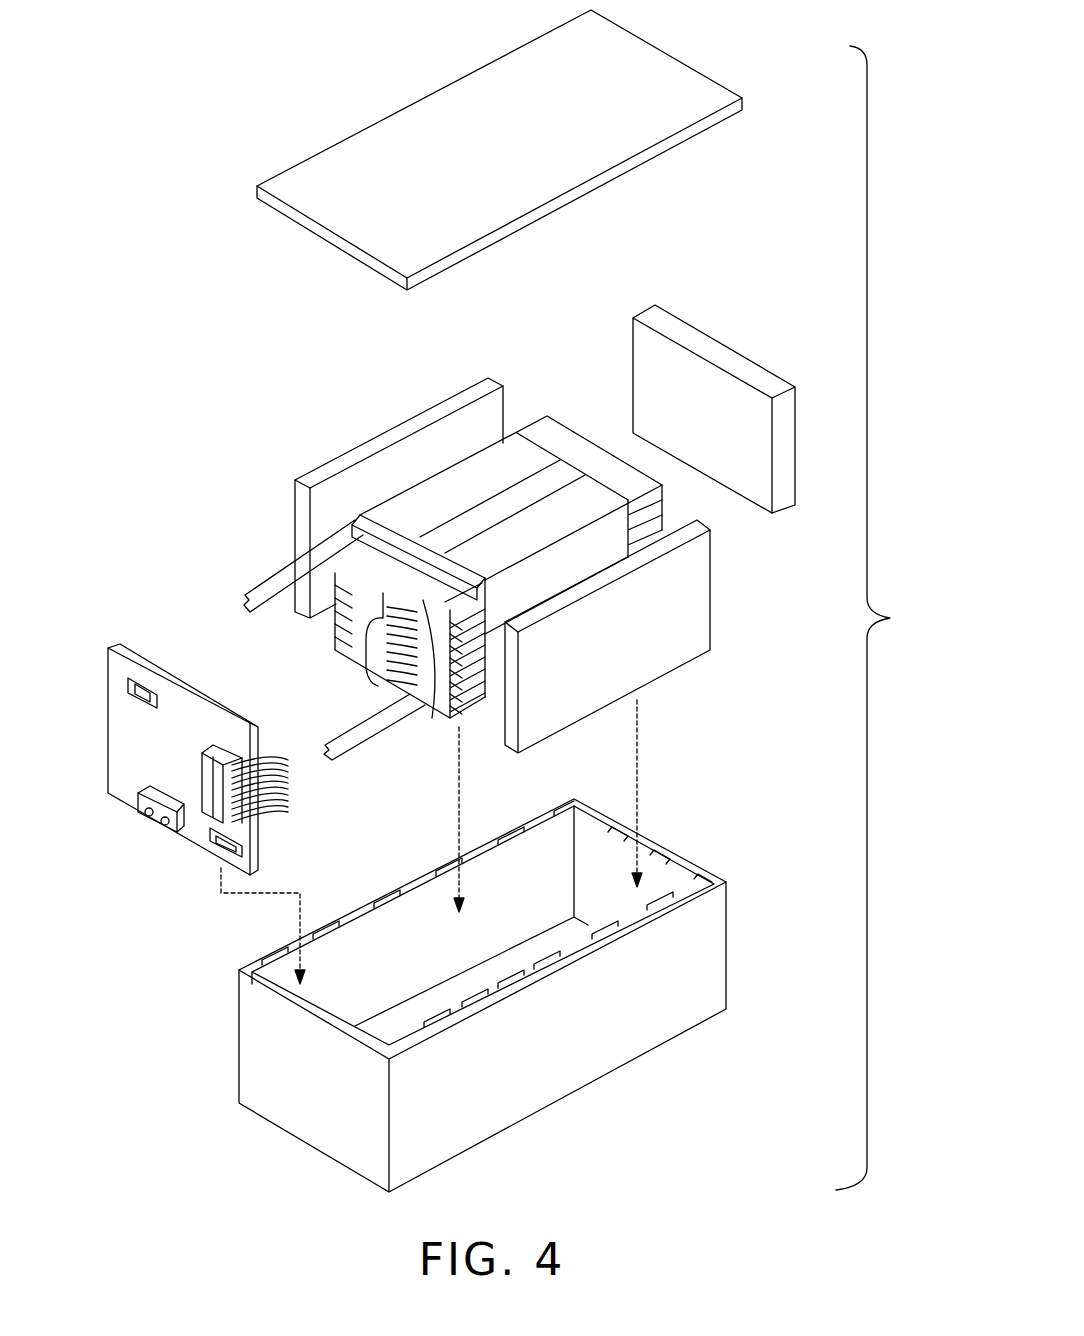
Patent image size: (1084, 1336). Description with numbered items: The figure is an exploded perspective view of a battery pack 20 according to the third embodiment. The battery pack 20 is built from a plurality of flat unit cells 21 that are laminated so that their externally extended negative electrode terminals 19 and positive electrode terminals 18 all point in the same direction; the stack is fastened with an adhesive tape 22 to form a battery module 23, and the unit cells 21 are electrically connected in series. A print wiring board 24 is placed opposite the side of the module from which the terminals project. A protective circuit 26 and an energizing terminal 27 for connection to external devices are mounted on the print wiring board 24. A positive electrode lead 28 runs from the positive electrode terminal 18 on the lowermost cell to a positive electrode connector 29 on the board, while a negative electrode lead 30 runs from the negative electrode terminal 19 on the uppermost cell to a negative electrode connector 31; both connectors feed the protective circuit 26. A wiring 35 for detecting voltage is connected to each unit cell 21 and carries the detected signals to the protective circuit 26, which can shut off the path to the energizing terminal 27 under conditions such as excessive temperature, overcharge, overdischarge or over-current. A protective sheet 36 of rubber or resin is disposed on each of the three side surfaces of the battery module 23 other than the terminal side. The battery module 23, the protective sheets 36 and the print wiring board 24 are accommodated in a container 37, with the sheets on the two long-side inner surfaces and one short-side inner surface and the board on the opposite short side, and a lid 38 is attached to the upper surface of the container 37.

The positive electrode terminal 18 is at (427, 707).
The negative electrode terminal 19 is at (342, 542).
The battery pack 20 is at (147, 182).
The unit cell 21 is at (664, 543).
The adhesive tape 22 is at (575, 497).
The battery module 23 is at (445, 480).
The print wiring board 24 is at (142, 650).
The protective circuit 26 is at (218, 748).
The energizing terminal 27 is at (163, 832).
The positive electrode lead 28 is at (372, 738).
The positive electrode connector 29 is at (240, 848).
The negative electrode lead 30 is at (258, 584).
The negative electrode connector 31 is at (148, 687).
The wiring for detecting voltage 35 is at (358, 645).
The protective sheet 36 is at (362, 452).
The container 37 is at (713, 945).
The lid 38 is at (692, 77).